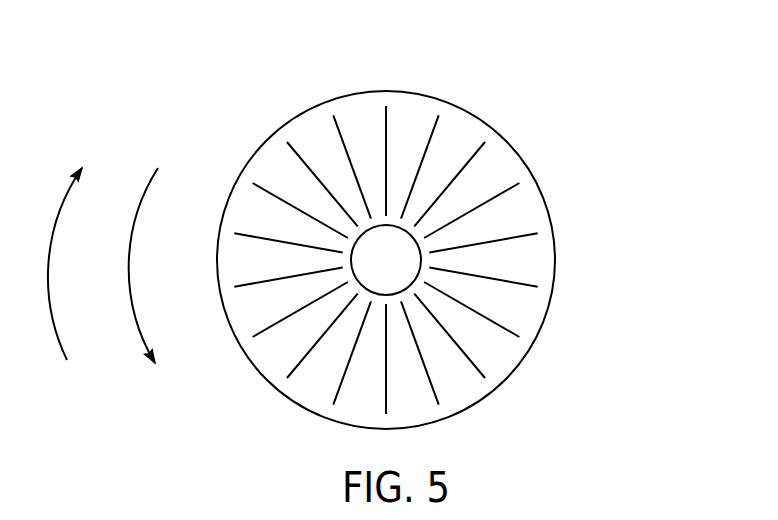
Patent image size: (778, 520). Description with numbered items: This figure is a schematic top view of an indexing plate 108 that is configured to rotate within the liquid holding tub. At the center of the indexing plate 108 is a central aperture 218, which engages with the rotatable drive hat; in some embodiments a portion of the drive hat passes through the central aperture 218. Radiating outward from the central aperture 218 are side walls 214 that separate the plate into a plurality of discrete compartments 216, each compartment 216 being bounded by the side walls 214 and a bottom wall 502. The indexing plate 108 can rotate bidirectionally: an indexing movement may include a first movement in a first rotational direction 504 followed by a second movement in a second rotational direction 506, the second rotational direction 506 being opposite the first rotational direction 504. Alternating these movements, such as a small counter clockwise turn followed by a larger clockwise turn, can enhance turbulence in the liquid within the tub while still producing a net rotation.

The indexing plate 108 is at (502, 100).
The side walls 214 is at (498, 194).
The discrete compartments 216 is at (521, 214).
The central aperture 218 is at (391, 255).
The bottom wall 502 is at (525, 225).
The first rotational direction 504 is at (130, 271).
The second rotational direction 506 is at (48, 271).